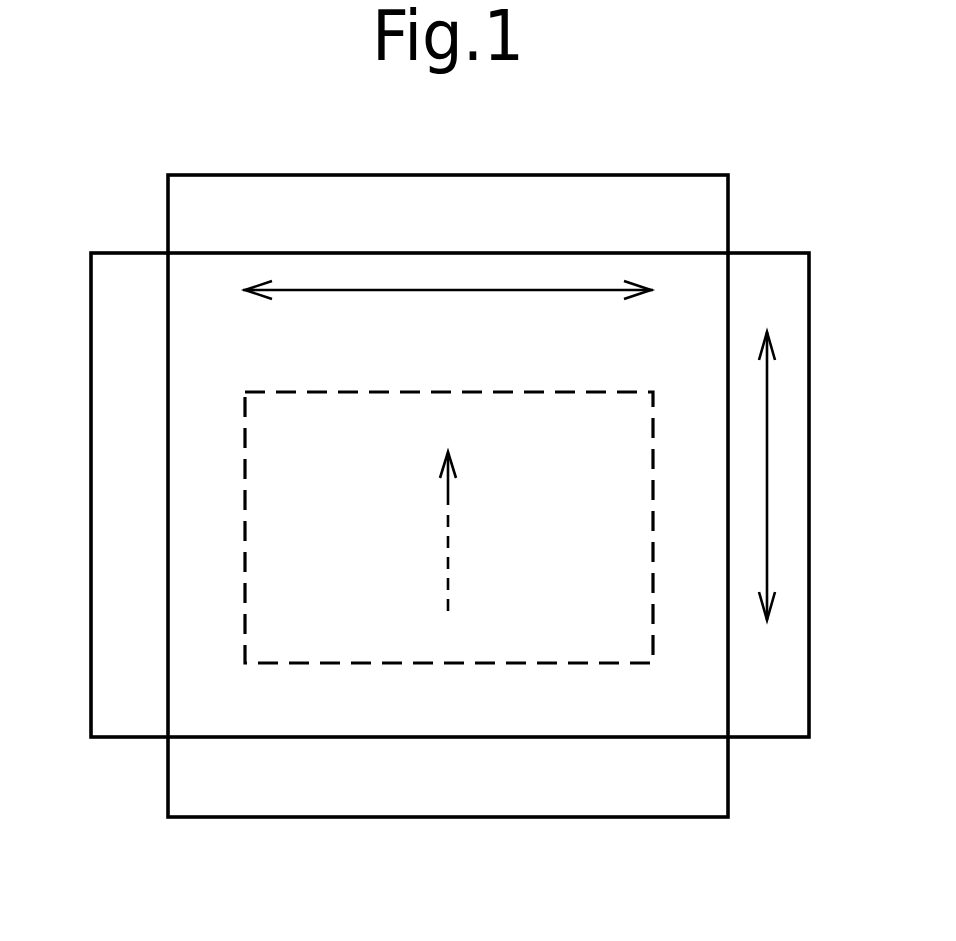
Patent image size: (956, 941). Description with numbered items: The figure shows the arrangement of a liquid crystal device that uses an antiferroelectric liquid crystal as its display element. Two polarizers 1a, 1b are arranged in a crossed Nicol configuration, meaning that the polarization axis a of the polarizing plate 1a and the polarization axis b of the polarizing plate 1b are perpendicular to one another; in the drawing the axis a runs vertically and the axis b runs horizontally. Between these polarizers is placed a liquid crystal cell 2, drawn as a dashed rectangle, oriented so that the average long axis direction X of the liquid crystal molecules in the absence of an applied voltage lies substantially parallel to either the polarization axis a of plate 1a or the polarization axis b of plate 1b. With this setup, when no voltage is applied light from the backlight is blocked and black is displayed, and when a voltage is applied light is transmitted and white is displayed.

The polarizer 1a is at (763, 268).
The polarizer 1b is at (670, 197).
The liquid crystal cell 2 is at (247, 558).
The polarization axis a is at (768, 460).
The polarization axis b is at (329, 290).
The average long axis direction X is at (447, 578).